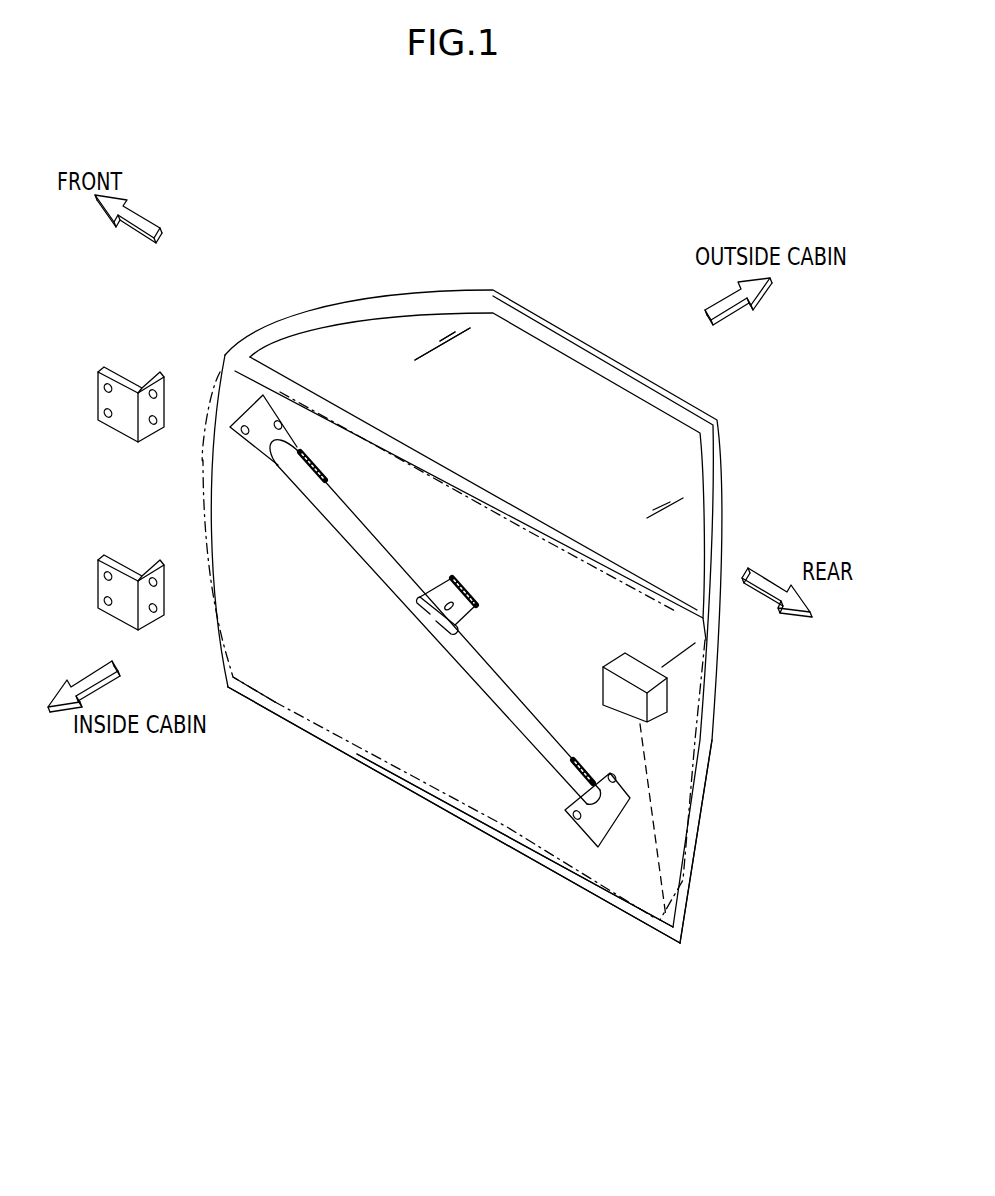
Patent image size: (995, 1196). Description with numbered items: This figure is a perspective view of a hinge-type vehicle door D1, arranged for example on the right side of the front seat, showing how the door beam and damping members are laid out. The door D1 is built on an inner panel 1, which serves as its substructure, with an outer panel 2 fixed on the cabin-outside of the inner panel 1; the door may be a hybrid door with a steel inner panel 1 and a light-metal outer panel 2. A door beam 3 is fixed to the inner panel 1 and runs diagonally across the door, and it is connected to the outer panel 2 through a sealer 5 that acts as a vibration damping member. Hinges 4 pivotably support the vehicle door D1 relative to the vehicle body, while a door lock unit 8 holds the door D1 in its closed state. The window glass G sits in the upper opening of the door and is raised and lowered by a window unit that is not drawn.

The vehicle door D1 is at (427, 246).
The window glass G is at (540, 387).
The inner panel 1 is at (362, 750).
The outer panel 2 is at (627, 913).
The door beam 3 is at (493, 722).
The hinges 4 is at (100, 555).
The sealer 5 is at (458, 578).
The door lock unit 8 is at (658, 695).